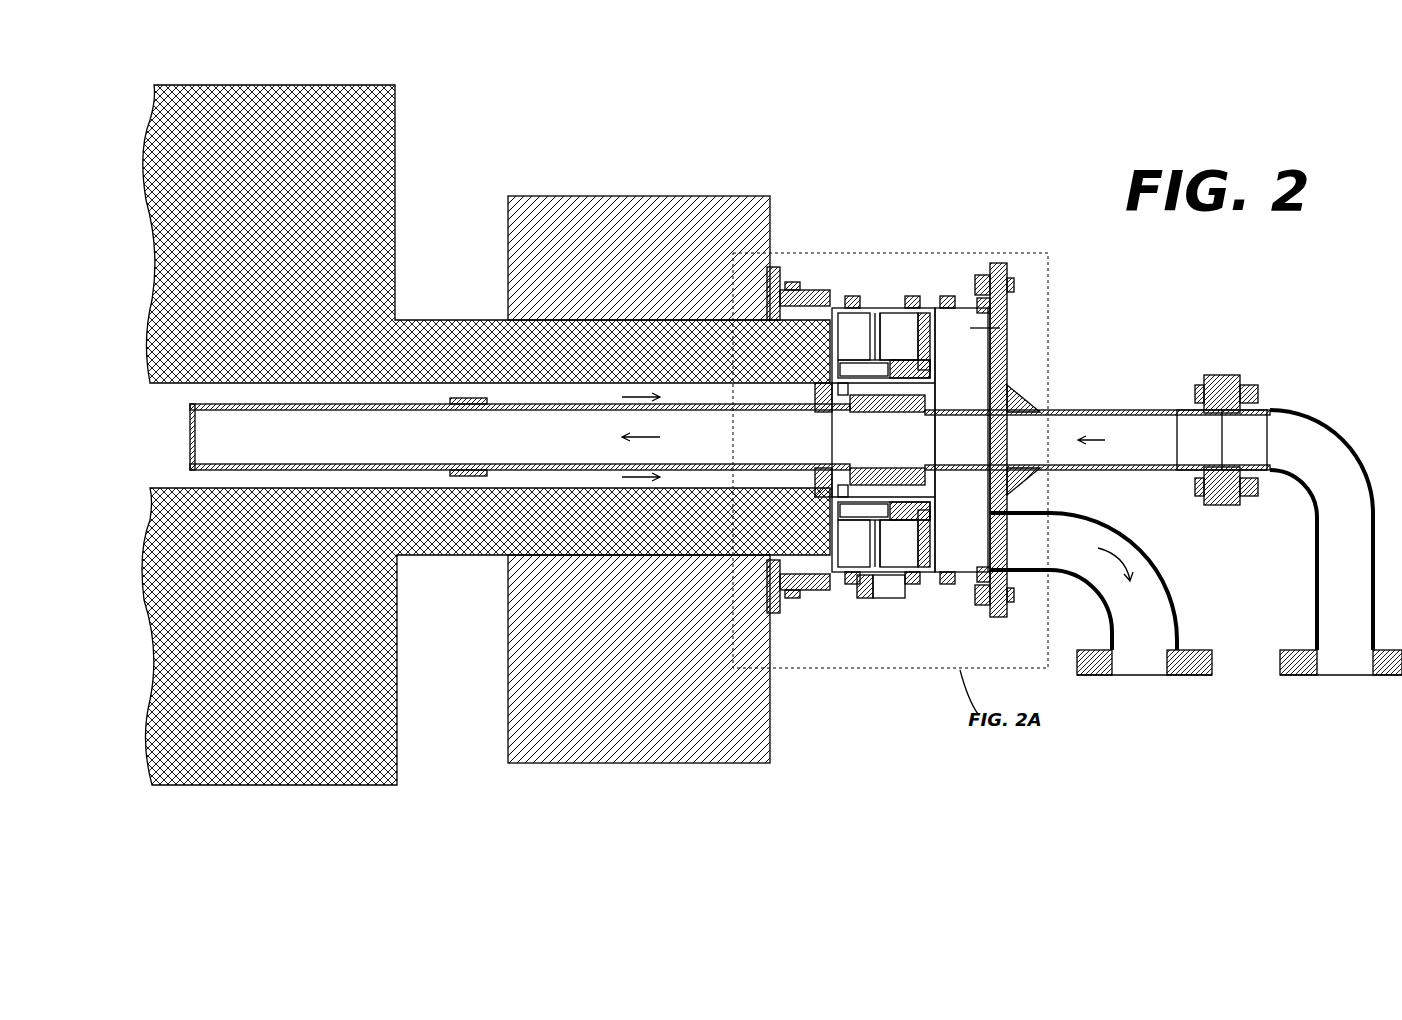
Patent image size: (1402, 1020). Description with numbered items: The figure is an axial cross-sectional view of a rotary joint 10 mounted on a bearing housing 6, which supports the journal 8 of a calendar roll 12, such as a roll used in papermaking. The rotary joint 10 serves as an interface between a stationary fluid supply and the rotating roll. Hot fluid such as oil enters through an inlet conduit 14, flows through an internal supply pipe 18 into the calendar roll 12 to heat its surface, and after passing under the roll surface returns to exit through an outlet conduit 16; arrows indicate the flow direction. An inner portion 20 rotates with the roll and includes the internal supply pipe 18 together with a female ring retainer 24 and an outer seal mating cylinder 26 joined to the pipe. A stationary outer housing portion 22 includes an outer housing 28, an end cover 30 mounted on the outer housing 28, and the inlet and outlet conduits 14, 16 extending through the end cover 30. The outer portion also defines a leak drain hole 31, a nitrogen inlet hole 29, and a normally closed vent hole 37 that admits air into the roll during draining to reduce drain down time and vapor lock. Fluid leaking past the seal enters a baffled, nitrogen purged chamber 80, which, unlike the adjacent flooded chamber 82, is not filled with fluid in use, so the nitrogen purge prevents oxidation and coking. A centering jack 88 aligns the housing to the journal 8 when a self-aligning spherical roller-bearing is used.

The bearing housing 6 is at (752, 215).
The journal 8 is at (447, 330).
The rotary joint 10 is at (978, 180).
The calendar roll 12 is at (317, 95).
The inlet conduit 14 is at (1100, 415).
The outlet conduit 16 is at (1132, 556).
The internal supply pipe 18 is at (510, 448).
The inner portion 20 is at (895, 315).
The outer housing portion 22 is at (835, 254).
The female ring retainer 24 is at (878, 470).
The outer seal mating cylinder 26 is at (847, 478).
The outer housing 28 is at (888, 335).
The nitrogen inlet hole 29 is at (856, 280).
The end cover 30 is at (1005, 330).
The leak drain hole 31 is at (887, 606).
The vent hole 37 is at (952, 280).
The chamber 80 is at (875, 318).
The chamber 82 is at (997, 330).
The centering jack 88 is at (799, 274).